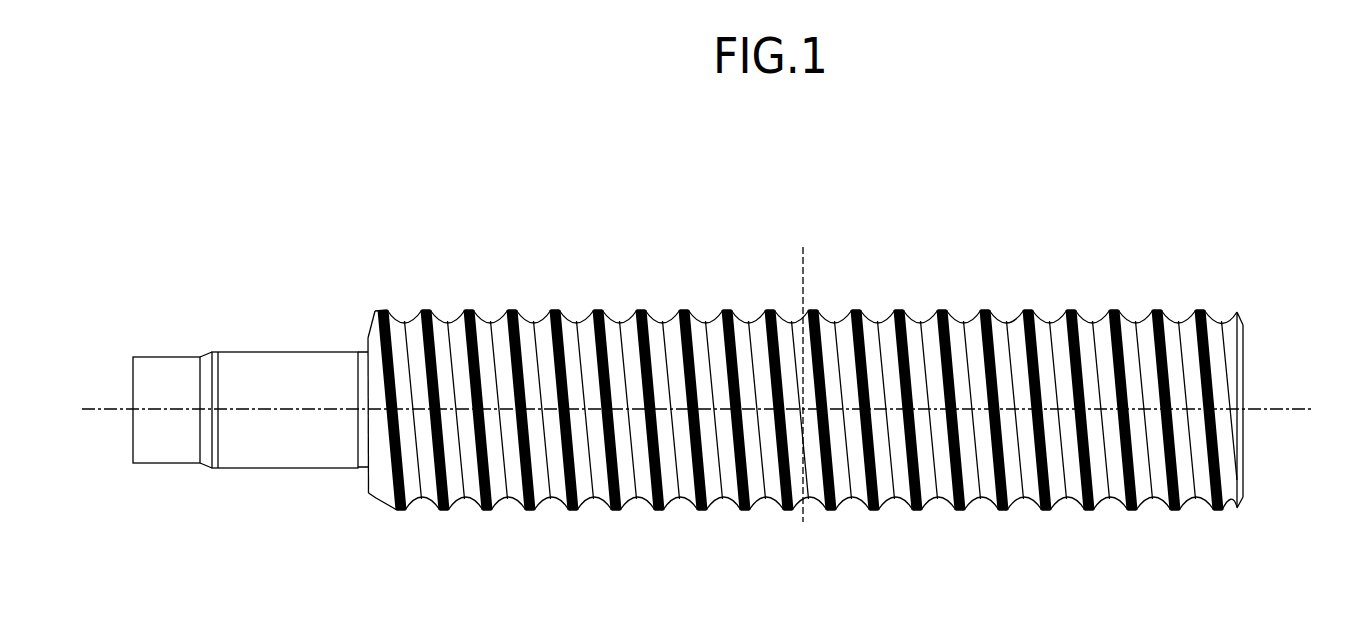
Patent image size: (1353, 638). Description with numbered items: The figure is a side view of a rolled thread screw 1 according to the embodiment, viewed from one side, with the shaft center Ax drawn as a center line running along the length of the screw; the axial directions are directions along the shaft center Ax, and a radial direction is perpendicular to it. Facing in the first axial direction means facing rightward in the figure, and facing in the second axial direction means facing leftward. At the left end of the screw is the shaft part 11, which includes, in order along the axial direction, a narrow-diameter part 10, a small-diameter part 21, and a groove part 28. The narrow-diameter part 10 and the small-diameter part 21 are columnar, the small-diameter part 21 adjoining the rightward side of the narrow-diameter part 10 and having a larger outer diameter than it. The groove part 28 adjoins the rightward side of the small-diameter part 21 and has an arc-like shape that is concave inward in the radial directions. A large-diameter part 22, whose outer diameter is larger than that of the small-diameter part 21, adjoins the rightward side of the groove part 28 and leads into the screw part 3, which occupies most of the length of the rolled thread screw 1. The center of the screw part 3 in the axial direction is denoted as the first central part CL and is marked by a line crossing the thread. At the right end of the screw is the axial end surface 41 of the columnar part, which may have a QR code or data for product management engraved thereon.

The rolled thread screw 1 is at (1031, 288).
The screw part 3 is at (1240, 528).
The narrow-diameter part 10 is at (157, 448).
The shaft part 11 is at (358, 528).
The small-diameter part 21 is at (250, 458).
The large-diameter part 22 is at (368, 336).
The groove part 28 is at (358, 443).
The axial end surface 41 is at (1247, 458).
The first central part CL is at (806, 272).
The shaft center Ax is at (1288, 408).